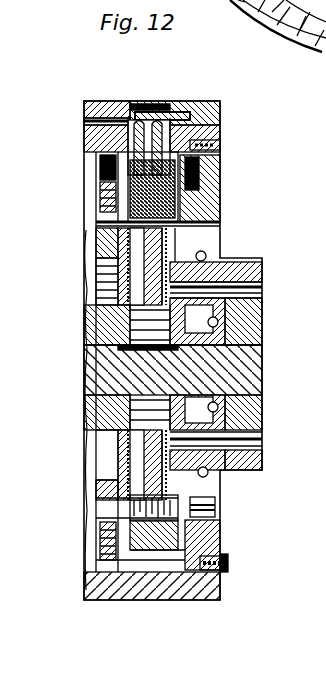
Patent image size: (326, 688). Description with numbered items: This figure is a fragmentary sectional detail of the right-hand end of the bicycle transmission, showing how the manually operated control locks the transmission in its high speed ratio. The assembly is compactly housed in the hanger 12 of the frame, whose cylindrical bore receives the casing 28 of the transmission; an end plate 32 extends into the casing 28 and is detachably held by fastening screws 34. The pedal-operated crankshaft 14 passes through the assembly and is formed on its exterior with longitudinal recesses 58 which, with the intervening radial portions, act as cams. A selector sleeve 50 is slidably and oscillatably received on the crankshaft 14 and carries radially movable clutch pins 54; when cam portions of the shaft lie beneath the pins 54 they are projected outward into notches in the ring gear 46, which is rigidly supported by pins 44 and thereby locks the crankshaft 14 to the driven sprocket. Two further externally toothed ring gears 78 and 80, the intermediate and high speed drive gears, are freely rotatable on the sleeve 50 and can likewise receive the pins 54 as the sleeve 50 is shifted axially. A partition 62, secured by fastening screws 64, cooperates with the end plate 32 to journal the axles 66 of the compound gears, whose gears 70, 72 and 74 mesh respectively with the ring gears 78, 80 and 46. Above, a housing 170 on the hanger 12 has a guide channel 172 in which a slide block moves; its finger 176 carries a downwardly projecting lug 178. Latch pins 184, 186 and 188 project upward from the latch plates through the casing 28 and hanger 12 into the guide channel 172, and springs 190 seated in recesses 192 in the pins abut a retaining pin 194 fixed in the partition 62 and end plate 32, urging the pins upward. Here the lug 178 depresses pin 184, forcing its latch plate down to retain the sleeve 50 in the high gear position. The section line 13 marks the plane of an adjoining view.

The hanger 12 is at (108, 585).
The section line 13- 13 is at (110, 56).
The crankshaft 14 is at (246, 378).
The casing 28 is at (93, 142).
The end plate 32 is at (205, 195).
The fastening screws 34 is at (228, 566).
The pins 44 is at (256, 290).
The ring gear 46 is at (212, 266).
The sleeve 50 is at (96, 326).
The pins 54 is at (122, 410).
The recesses 58 is at (125, 345).
The partition 62 is at (102, 242).
The fastening screws 64 is at (107, 160).
The axles 66 is at (214, 508).
The gear 70 is at (108, 518).
The gear 72 is at (108, 540).
The gear 74 is at (188, 542).
The ring gear 78 is at (112, 262).
The ring gear 80 is at (150, 292).
The housing 170 is at (220, 101).
The guide channel 172 is at (228, 125).
The finger 176 is at (88, 103).
The lug 178 is at (133, 118).
The pin 184 is at (127, 135).
The pin 186 is at (177, 110).
The pin 188 is at (200, 145).
The springs 190 is at (120, 196).
The recesses 192 is at (200, 185).
The retaining pin 194 is at (215, 219).